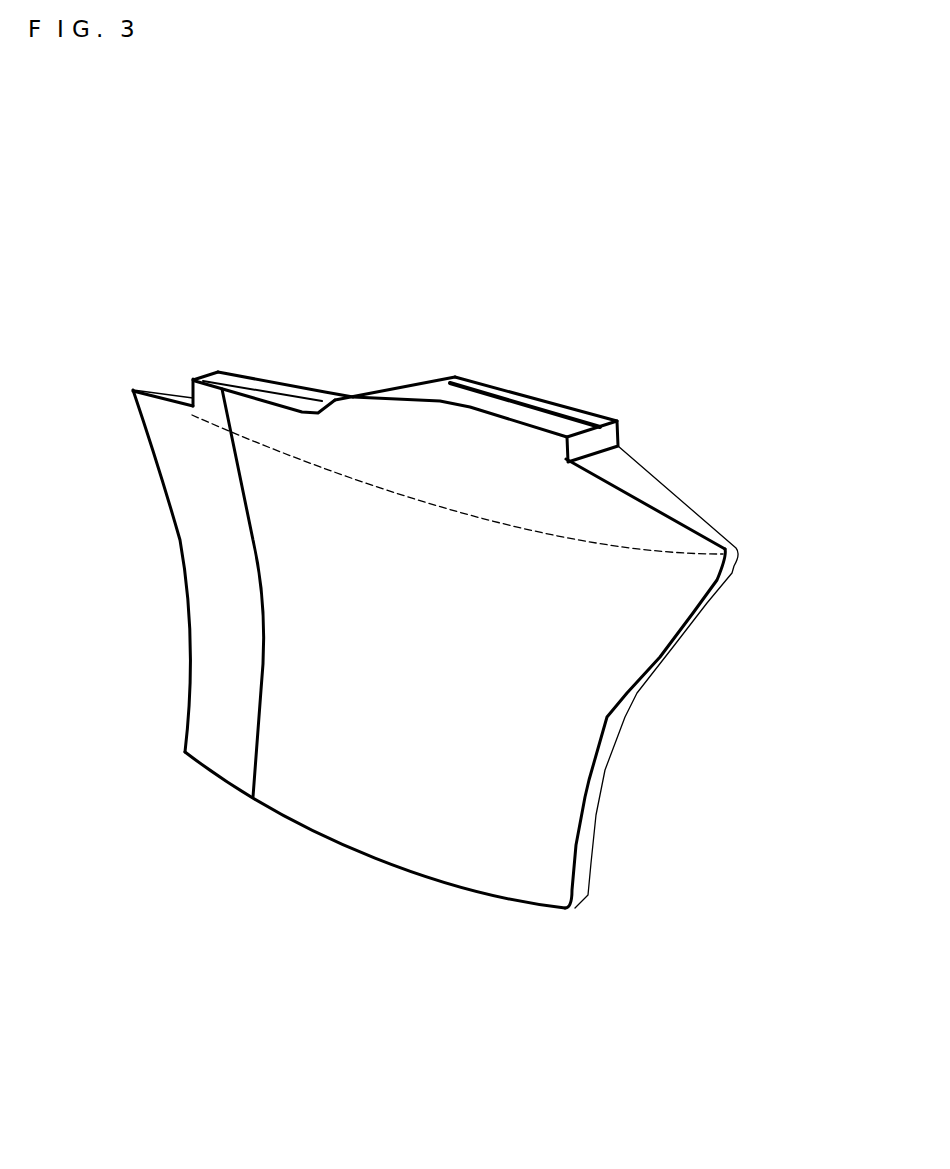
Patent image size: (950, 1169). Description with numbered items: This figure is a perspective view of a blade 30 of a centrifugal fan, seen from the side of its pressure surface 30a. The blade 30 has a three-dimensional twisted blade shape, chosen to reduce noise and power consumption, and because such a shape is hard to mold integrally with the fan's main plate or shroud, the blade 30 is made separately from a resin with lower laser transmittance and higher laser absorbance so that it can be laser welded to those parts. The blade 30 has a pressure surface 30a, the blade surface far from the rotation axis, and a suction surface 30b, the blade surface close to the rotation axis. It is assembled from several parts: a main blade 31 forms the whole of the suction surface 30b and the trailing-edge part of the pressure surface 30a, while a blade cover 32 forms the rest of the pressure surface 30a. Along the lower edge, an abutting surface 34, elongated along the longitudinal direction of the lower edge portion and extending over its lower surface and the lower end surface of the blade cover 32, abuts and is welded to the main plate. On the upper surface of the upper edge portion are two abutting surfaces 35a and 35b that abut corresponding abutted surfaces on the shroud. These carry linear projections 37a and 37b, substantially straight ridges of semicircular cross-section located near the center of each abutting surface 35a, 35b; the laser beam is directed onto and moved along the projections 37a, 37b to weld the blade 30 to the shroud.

The blade 30 is at (638, 290).
The pressure surface 30a is at (255, 837).
The suction surface 30b is at (455, 354).
The main blade 31 is at (640, 475).
The blade cover 32 is at (505, 740).
The abutting surface 34 is at (367, 855).
The abutting surface 35a is at (492, 388).
The abutting surface 35b is at (327, 390).
The projection 37a is at (533, 403).
The projection 37b is at (278, 380).